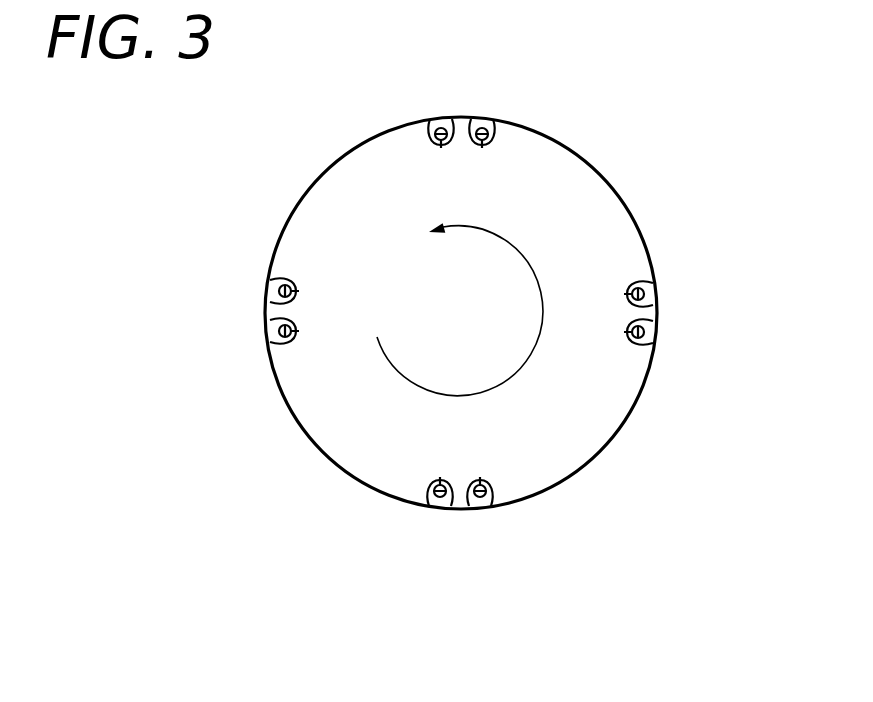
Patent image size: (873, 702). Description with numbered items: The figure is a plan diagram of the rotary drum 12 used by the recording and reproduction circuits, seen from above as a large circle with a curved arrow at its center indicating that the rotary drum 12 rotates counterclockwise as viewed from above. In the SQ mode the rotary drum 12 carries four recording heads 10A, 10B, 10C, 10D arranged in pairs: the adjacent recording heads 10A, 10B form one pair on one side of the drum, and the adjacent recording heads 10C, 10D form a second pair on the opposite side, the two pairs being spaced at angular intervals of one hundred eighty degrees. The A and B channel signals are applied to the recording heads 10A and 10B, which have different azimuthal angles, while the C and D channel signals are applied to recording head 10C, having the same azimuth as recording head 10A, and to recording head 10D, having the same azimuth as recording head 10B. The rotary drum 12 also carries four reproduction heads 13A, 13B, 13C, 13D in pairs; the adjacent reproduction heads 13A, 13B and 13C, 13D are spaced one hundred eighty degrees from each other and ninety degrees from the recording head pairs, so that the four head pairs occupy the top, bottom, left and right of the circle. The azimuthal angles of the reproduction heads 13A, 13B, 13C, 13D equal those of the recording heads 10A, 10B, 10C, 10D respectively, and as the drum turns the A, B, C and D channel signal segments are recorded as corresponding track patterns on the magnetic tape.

The rotary drum 12 is at (583, 207).
The recording head 10A is at (655, 290).
The recording head 10B is at (655, 331).
The recording head 10C is at (265, 330).
The recording head 10D is at (265, 292).
The reproduction head 13A is at (480, 512).
The reproduction head 13B is at (440, 512).
The reproduction head 13C is at (440, 117).
The reproduction head 13D is at (482, 116).